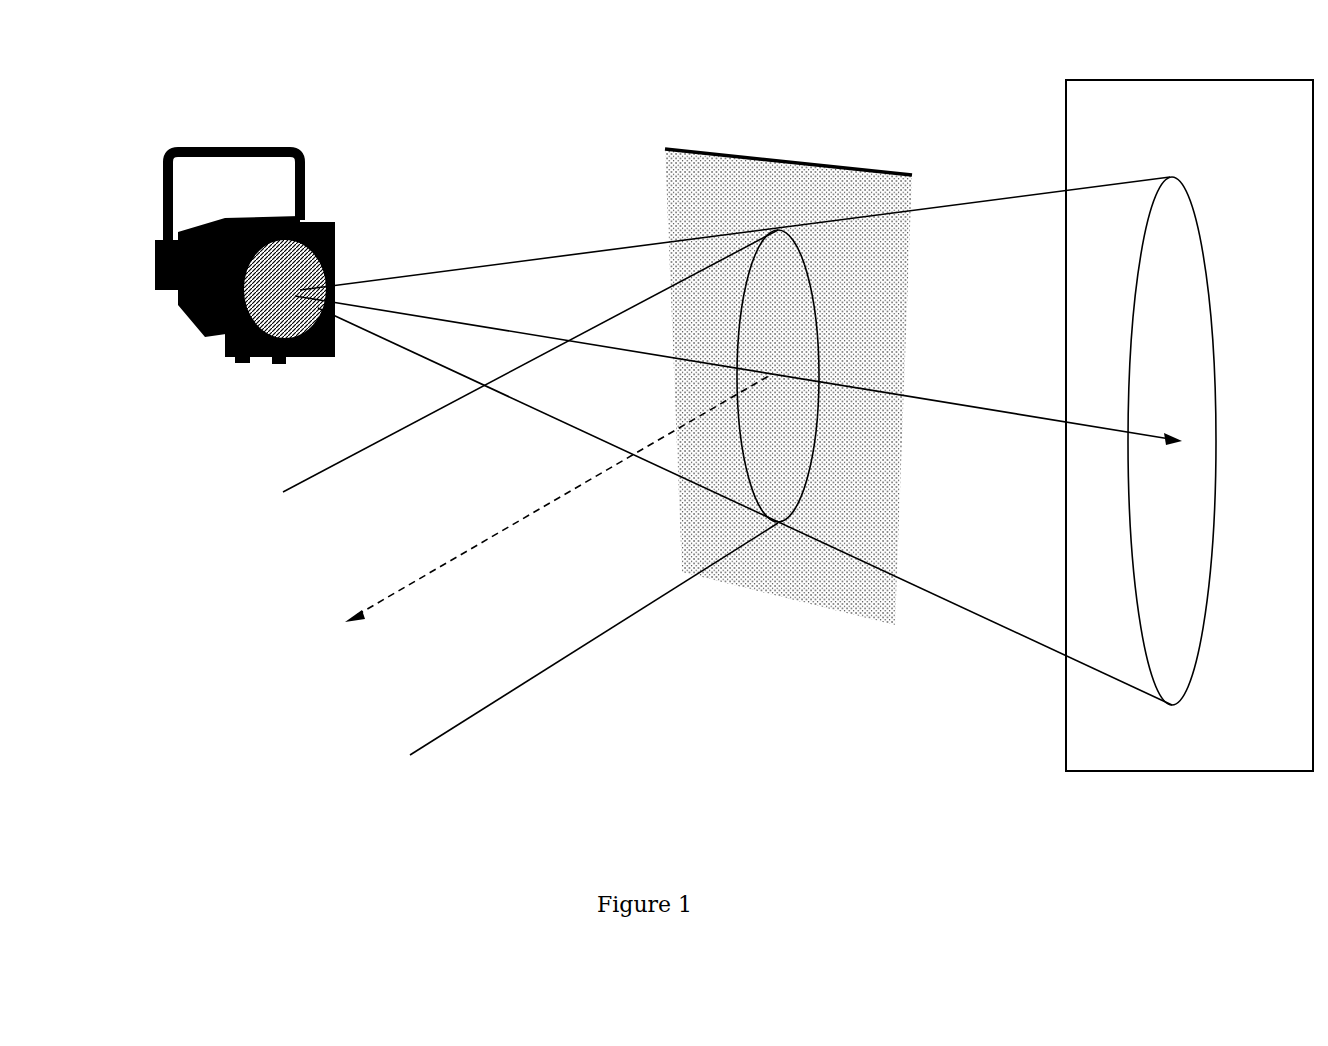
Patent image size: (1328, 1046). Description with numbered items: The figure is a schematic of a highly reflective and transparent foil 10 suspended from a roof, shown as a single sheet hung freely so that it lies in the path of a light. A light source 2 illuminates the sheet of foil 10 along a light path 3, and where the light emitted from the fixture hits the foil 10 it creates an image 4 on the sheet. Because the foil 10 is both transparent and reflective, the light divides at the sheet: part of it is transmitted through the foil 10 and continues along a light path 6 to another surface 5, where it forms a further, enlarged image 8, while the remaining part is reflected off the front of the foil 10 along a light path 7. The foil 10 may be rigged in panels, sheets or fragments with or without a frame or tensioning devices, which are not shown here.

The light source 2 is at (310, 210).
The light path 3 is at (477, 323).
The image 4 is at (787, 442).
The surface 5 is at (1197, 80).
The light path 6 is at (1185, 433).
The light path 7 is at (412, 588).
The enlarged image 8 is at (1207, 262).
The foil 10 is at (820, 162).